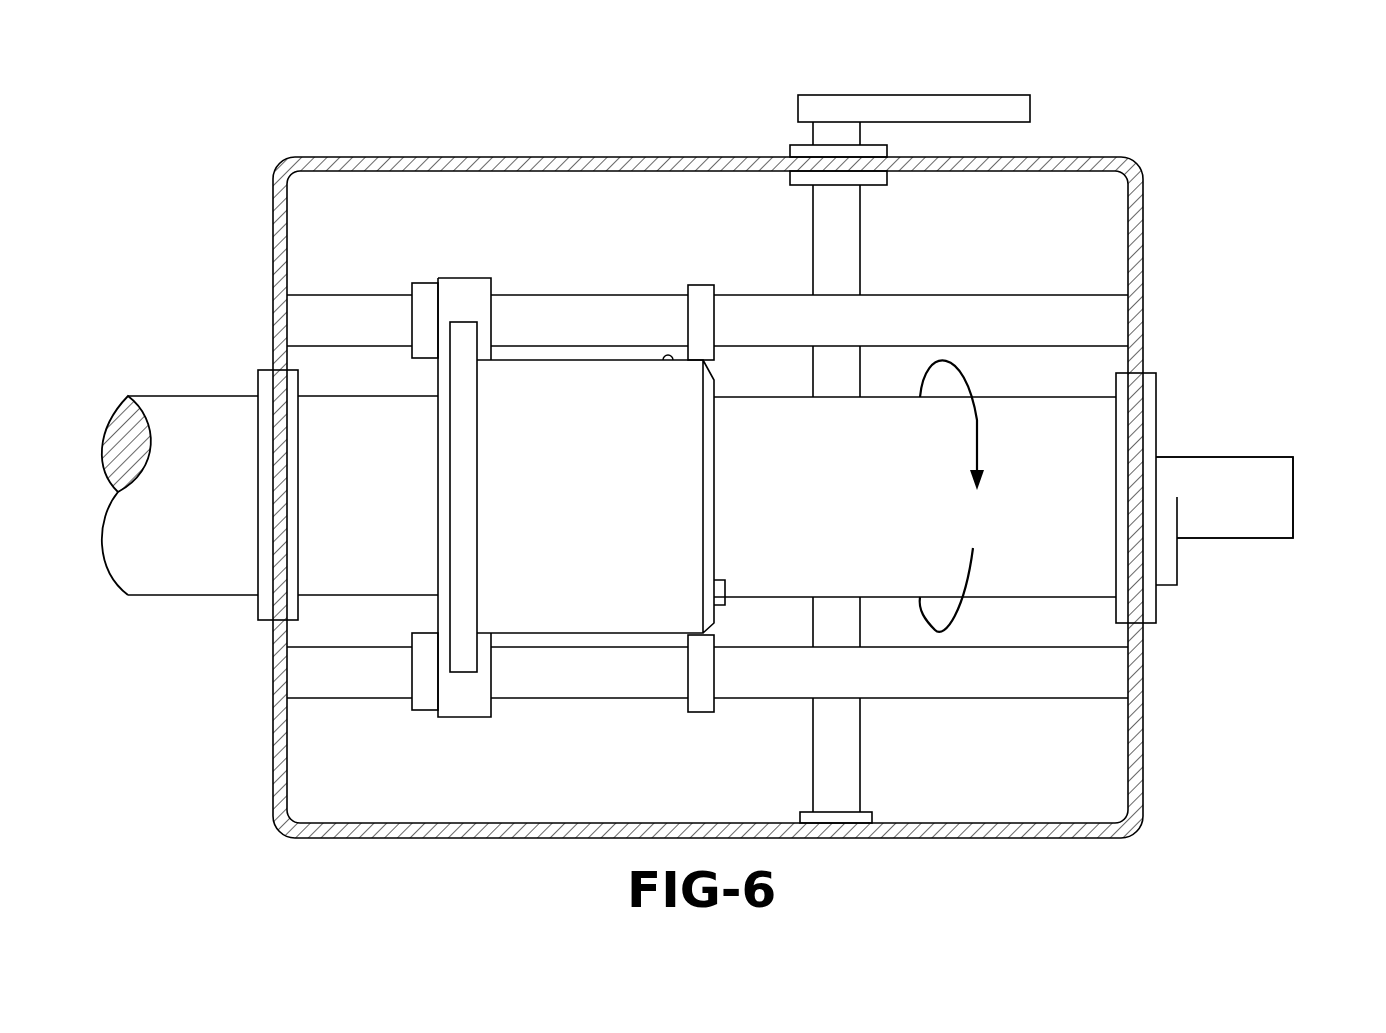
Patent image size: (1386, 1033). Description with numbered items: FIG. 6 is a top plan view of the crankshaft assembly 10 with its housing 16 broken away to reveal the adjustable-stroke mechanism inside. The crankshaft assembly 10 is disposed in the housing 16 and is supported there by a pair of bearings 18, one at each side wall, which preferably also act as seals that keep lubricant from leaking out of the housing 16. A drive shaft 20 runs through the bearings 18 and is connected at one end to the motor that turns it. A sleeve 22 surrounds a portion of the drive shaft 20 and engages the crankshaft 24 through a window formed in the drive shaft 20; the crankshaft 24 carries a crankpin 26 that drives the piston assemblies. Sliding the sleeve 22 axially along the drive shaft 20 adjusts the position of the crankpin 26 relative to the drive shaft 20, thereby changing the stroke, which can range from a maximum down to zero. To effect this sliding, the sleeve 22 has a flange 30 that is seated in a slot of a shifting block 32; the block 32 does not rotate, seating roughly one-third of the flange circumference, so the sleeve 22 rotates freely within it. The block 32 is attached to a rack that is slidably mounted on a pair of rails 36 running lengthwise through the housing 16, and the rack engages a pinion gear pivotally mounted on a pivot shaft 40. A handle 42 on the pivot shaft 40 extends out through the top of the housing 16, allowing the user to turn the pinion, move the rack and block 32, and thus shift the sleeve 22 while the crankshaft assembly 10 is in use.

The crankshaft assembly 10 is at (522, 255).
The housing 16 is at (612, 157).
The bearings 18 is at (258, 530).
The drive shaft 20 is at (367, 572).
The sleeve 22 is at (586, 380).
The crankshaft 24 is at (1233, 453).
The crankpin 26 is at (1286, 498).
The flange 30 is at (468, 487).
The shifting block 32 is at (466, 705).
The rails 36 is at (1032, 305).
The pivot shaft 40 is at (850, 237).
The handle 42 is at (1002, 100).